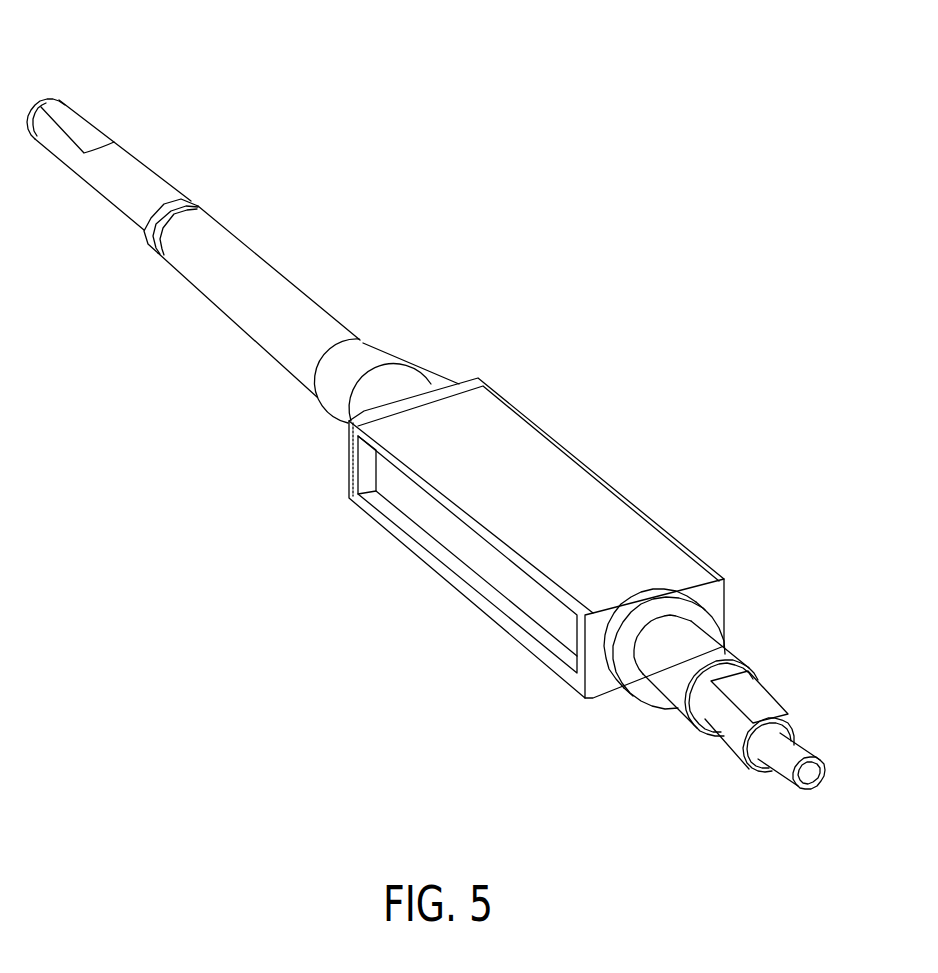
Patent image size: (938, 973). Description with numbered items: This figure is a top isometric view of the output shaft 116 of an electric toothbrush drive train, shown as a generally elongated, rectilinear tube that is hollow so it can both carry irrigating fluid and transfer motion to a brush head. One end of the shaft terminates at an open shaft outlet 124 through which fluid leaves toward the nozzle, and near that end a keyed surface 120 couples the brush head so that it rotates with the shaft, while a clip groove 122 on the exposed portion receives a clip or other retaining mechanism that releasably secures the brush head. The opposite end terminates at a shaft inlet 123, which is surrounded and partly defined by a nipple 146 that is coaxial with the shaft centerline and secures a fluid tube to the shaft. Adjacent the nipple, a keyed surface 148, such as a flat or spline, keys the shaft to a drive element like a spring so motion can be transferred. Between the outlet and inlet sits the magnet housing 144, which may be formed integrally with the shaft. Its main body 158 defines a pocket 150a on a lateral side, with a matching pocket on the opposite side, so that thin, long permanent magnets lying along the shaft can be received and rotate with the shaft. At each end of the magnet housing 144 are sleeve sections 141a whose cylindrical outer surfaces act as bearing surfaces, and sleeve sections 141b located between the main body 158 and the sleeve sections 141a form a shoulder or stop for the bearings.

The output shaft 116 is at (365, 247).
The keyed surface 120 is at (82, 120).
The clip groove 122 is at (190, 205).
The shaft inlet 123 is at (817, 781).
The shaft outlet 124 is at (50, 89).
The sleeve sections 141a is at (328, 400).
The sleeve sections 141b is at (420, 382).
The magnet housing 144 is at (672, 560).
The nipple 146 is at (780, 770).
The keyed surface 148 is at (755, 696).
The pocket 150a is at (440, 525).
The main body 158 is at (557, 477).